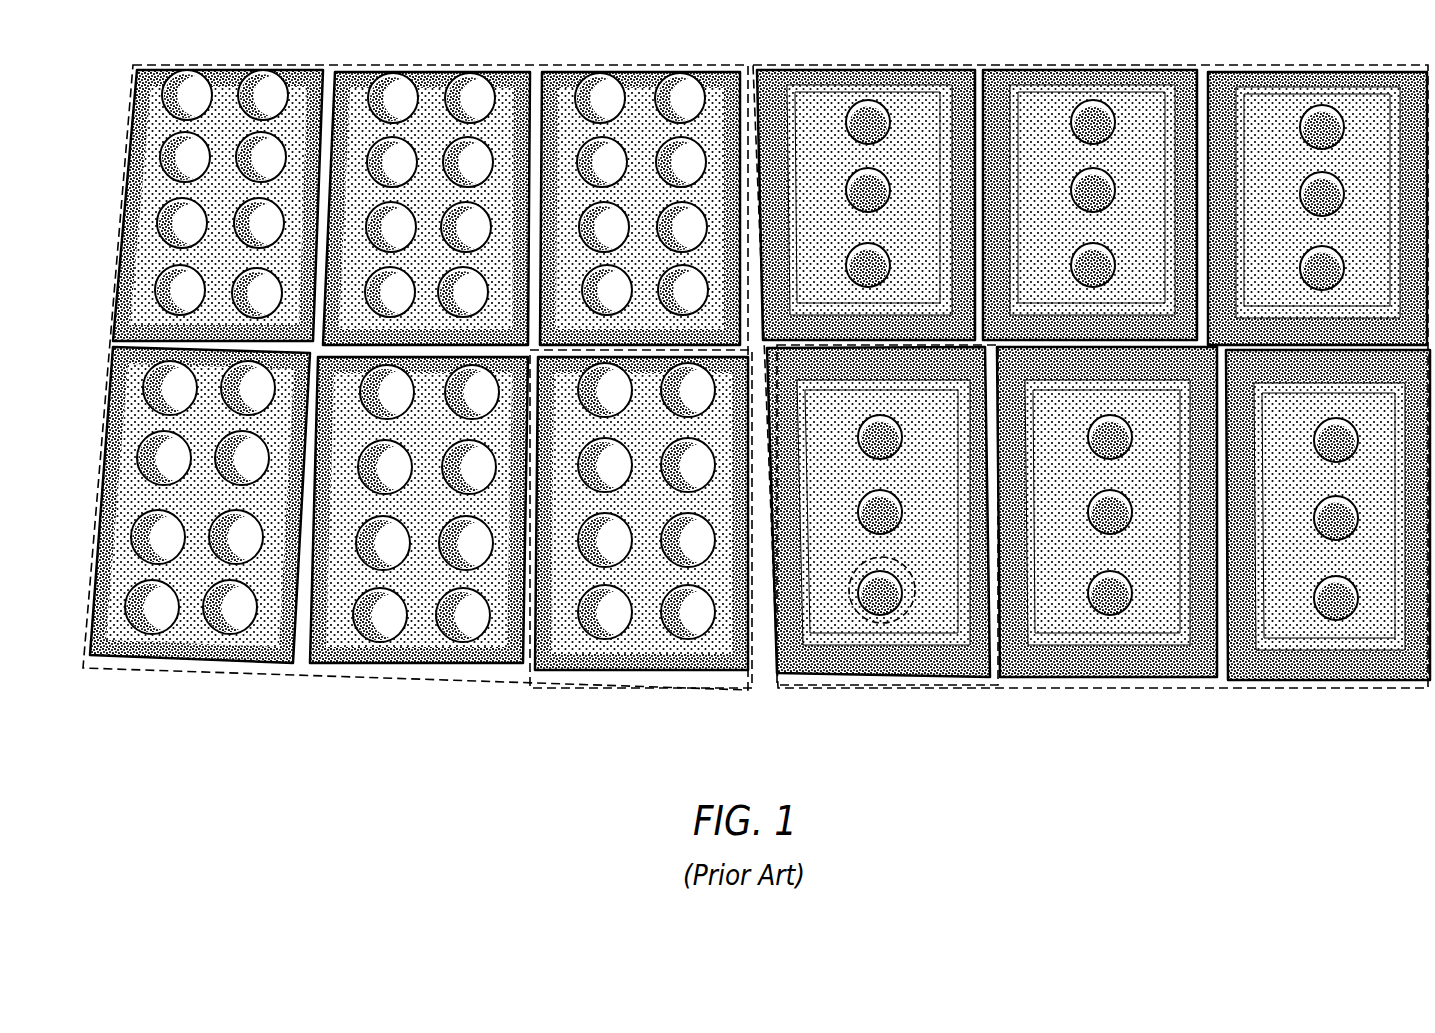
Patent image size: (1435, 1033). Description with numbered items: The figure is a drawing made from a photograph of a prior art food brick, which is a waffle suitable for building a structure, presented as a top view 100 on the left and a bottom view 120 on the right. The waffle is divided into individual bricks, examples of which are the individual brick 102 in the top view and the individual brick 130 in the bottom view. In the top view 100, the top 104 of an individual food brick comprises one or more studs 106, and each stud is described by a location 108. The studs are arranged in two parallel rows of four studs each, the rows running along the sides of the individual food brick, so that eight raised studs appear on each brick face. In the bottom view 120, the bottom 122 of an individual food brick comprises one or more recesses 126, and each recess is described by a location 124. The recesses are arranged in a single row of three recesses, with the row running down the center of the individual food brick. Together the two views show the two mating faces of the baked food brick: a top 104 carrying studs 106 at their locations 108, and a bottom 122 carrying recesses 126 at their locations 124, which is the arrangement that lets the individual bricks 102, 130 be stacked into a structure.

The top view 100 is at (383, 62).
The individual brick 102 is at (497, 636).
The top 104 is at (567, 682).
The stud 106 is at (622, 680).
The location 108 is at (686, 652).
The bottom view 120 is at (1097, 64).
The bottom 122 is at (817, 658).
The location 124 is at (858, 625).
The recess 126 is at (893, 603).
The individual brick 130 is at (1000, 578).